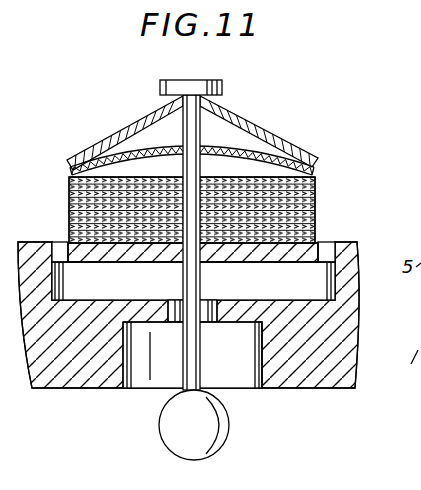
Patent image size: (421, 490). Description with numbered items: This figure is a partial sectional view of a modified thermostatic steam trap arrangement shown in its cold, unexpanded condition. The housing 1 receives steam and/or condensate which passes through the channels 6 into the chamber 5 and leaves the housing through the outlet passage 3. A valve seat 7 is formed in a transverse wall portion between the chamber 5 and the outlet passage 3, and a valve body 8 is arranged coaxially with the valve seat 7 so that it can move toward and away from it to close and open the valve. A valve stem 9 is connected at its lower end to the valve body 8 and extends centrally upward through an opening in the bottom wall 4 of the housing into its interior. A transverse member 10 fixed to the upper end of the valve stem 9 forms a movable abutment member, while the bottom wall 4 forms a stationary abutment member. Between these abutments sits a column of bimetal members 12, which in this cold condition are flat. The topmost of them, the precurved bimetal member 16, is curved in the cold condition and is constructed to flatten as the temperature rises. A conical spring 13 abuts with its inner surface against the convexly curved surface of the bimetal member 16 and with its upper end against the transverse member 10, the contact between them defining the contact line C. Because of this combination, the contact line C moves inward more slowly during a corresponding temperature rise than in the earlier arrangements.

The housing 1 is at (350, 327).
The outlet passage 3 is at (258, 382).
The bottom wall 4 is at (342, 243).
The chamber 5 is at (72, 281).
The channels 6 is at (60, 243).
The valve seat 7 is at (210, 323).
The valve body 8 is at (162, 426).
The valve stem 9 is at (186, 132).
The transverse member 10 is at (160, 88).
The bimetal members 12 is at (316, 177).
The conical spring 13 is at (278, 131).
The precurved bimetal member 16 is at (236, 152).
The contact line C is at (66, 170).